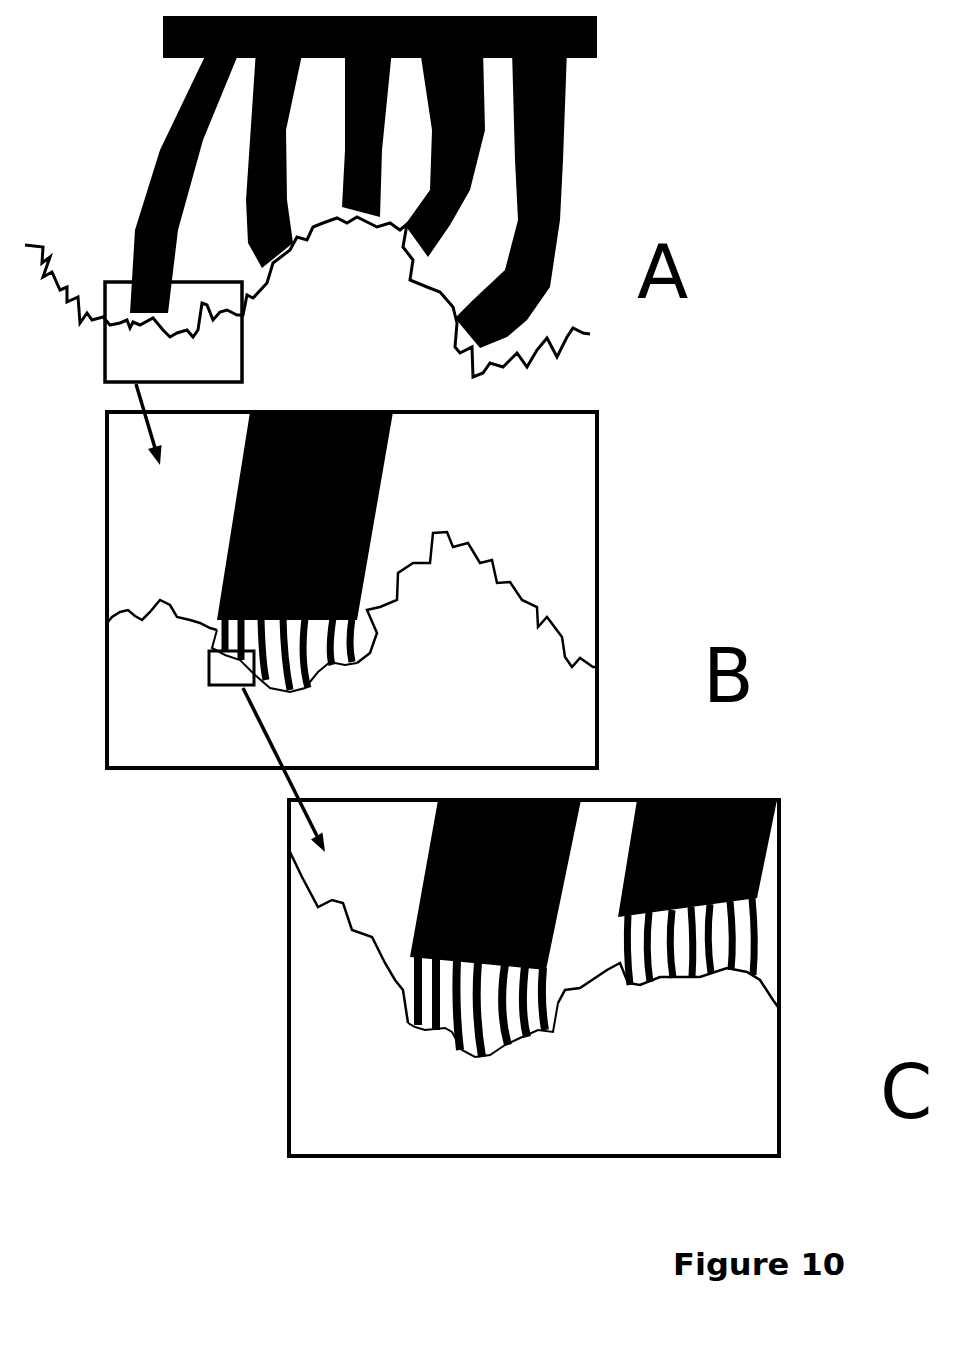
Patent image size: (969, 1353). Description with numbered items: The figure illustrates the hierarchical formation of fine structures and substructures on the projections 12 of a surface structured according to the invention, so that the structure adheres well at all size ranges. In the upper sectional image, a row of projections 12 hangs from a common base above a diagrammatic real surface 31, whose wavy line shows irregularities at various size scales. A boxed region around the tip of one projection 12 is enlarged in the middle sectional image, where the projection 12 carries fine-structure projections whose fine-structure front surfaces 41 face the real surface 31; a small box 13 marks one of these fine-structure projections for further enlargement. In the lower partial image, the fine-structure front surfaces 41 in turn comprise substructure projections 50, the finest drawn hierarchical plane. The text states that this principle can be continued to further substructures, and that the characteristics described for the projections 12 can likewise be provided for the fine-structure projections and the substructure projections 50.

The projections 12 is at (174, 181).
The real surface 31 is at (321, 297).
The finger tip region 13 is at (223, 623).
The fine-structure front surfaces 41 is at (417, 958).
The substructure projections 50 is at (556, 1022).